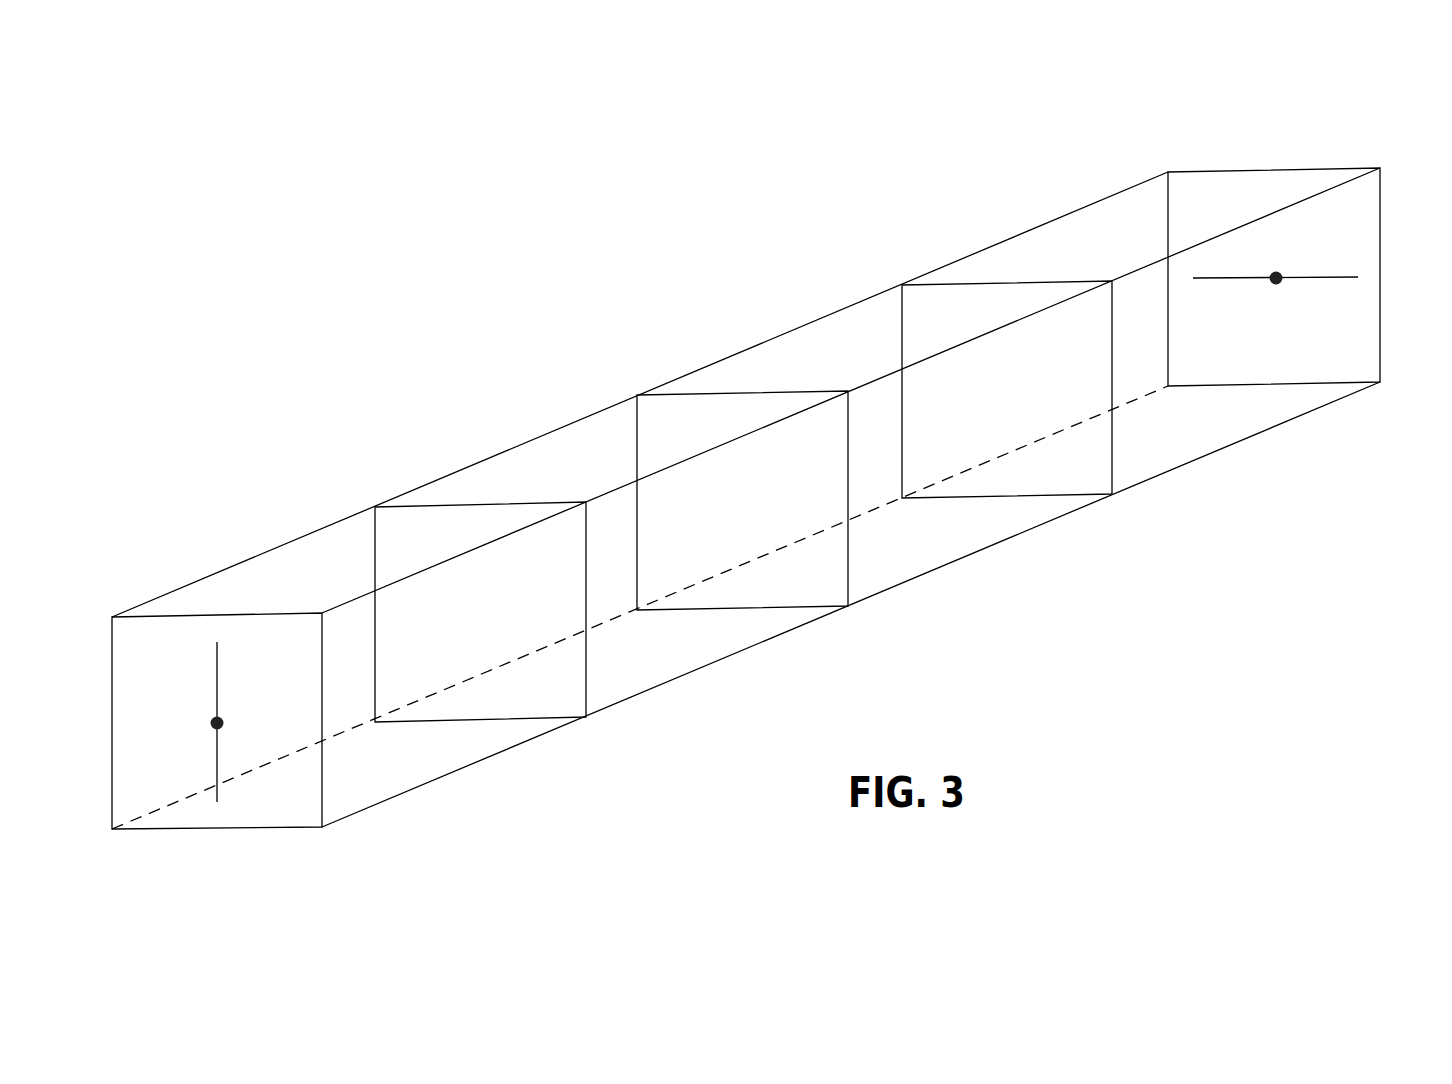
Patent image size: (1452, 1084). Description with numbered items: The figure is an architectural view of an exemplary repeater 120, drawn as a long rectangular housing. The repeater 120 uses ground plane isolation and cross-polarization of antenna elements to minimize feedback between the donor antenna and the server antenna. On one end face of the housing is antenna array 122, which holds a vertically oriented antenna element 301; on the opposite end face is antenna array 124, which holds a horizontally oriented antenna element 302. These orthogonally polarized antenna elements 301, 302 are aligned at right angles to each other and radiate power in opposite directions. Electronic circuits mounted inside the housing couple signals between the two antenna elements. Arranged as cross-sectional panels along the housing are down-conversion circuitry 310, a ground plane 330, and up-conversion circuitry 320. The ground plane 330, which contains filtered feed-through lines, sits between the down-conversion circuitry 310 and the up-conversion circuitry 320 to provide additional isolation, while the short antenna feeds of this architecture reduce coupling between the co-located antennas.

The repeater 120 is at (767, 340).
The antenna array 122 is at (218, 830).
The antenna array 124 is at (1275, 170).
The antenna element 301 is at (216, 662).
The antenna element 302 is at (1337, 275).
The down-conversion circuitry 310 is at (587, 687).
The up-conversion circuitry 320 is at (1114, 467).
The ground plane 330 is at (850, 580).